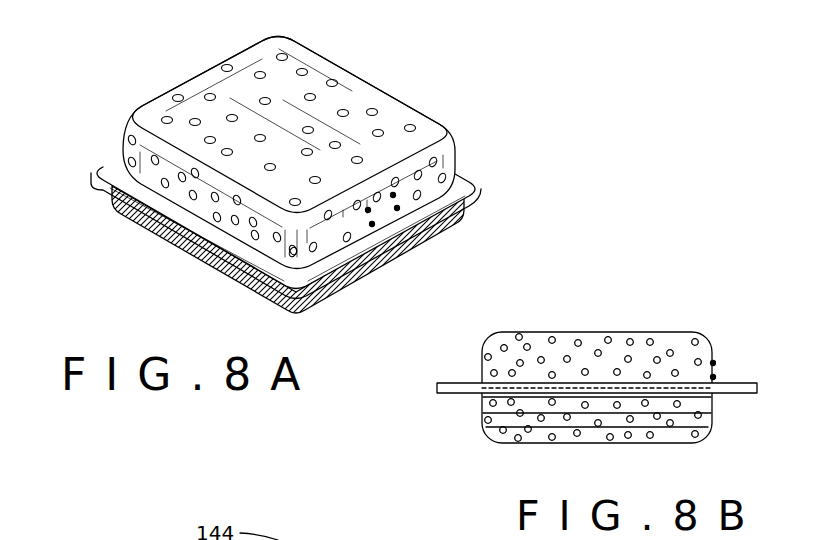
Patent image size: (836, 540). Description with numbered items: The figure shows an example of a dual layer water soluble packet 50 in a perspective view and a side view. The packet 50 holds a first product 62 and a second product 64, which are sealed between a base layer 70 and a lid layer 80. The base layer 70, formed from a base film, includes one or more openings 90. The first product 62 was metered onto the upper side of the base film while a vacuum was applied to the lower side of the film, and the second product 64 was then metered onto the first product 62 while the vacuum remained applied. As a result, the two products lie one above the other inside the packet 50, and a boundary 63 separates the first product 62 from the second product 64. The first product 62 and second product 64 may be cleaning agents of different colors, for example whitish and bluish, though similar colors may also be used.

In FIG. 8A, the water soluble packet 50 is at (477, 111).
In FIG. 8B, the water soluble packet 50 is at (708, 317).
In FIG. 8A, the first product 62 is at (285, 140).
In FIG. 8B, the first product 62 is at (567, 350).
In FIG. 8A, the boundary 63 is at (122, 151).
In FIG. 8B, the boundary 63 is at (527, 385).
In FIG. 8A, the second product 64 is at (174, 246).
In FIG. 8B, the second product 64 is at (590, 433).
In FIG. 8A, the base layer 70 is at (290, 138).
In FIG. 8B, the base layer 70 is at (640, 332).
In FIG. 8A, the lid layer 80 is at (433, 238).
In FIG. 8B, the lid layer 80 is at (638, 445).
In FIG. 8A, the openings 90 is at (397, 208).
In FIG. 8B, the openings 90 is at (713, 377).